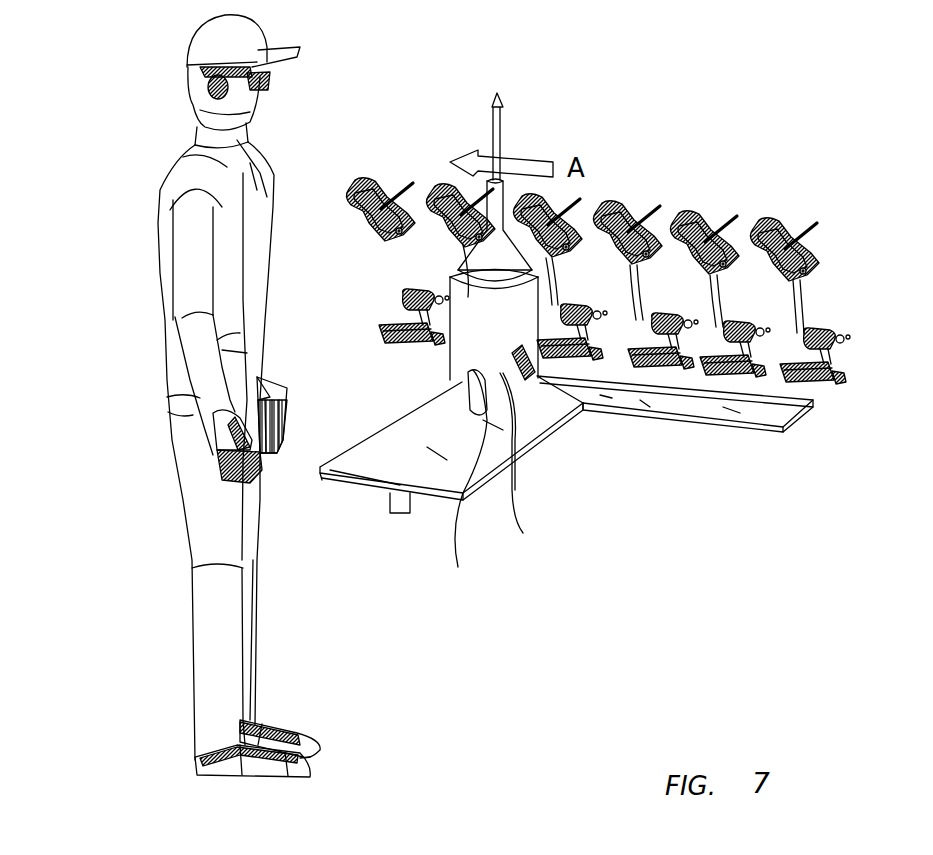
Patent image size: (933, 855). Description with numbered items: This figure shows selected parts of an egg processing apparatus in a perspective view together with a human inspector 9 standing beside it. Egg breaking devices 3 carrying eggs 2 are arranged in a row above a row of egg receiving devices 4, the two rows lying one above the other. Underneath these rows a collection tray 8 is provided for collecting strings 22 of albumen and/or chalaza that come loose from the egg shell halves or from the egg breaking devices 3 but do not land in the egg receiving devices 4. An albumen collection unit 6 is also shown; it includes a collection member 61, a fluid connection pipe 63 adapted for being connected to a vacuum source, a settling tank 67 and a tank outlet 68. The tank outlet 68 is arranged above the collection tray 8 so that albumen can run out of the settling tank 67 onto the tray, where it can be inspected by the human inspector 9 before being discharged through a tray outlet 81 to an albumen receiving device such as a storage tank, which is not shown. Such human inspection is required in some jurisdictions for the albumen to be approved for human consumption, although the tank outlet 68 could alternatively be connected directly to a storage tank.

The egg 2 is at (803, 270).
The egg breaking device 3 is at (789, 205).
The egg receiving device 4 is at (830, 370).
The albumen collection unit 6 is at (527, 360).
The collection tray 8 is at (793, 425).
The human inspector 9 is at (210, 583).
The string of albumen and/or chalaza 22 is at (643, 413).
The collection member 61 is at (628, 193).
The fluid connection pipe 63 is at (473, 210).
The settling tank 67 is at (528, 478).
The tank outlet 68 is at (467, 499).
The tray outlet 81 is at (398, 507).